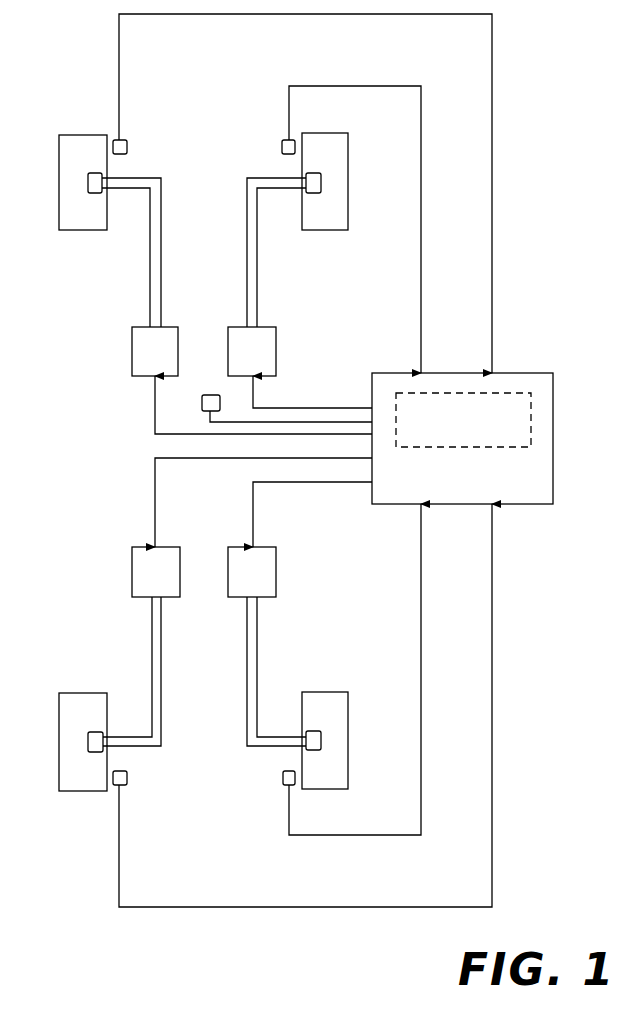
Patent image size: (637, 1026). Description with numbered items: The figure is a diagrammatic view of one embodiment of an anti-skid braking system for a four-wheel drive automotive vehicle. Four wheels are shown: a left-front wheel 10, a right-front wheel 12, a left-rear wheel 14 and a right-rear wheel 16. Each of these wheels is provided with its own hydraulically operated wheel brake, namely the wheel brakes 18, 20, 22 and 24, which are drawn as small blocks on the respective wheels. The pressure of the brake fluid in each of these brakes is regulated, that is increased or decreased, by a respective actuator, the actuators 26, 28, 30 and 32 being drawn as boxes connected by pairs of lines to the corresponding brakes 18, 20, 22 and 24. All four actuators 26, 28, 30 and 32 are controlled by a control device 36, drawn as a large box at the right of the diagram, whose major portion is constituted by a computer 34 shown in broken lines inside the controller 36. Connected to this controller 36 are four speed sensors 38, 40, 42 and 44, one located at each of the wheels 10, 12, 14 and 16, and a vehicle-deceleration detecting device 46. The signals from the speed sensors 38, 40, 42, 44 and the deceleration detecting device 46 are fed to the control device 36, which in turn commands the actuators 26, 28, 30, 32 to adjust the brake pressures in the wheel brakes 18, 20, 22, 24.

The left-front wheel 10 is at (75, 225).
The right-front wheel 12 is at (324, 220).
The left-rear wheel 14 is at (83, 702).
The right-rear wheel 16 is at (325, 698).
The wheel brake 18 is at (88, 180).
The wheel brake 20 is at (321, 182).
The wheel brake 22 is at (88, 738).
The wheel brake 24 is at (321, 738).
The actuator 26 is at (140, 352).
The actuator 28 is at (268, 352).
The actuator 30 is at (137, 571).
The actuator 32 is at (265, 571).
The computer 34 is at (530, 411).
The control device 36 is at (540, 460).
The speed sensor 38 is at (127, 146).
The speed sensor 40 is at (282, 147).
The speed sensor 42 is at (127, 776).
The speed sensor 44 is at (283, 778).
The vehicle-deceleration detecting device 46 is at (212, 395).